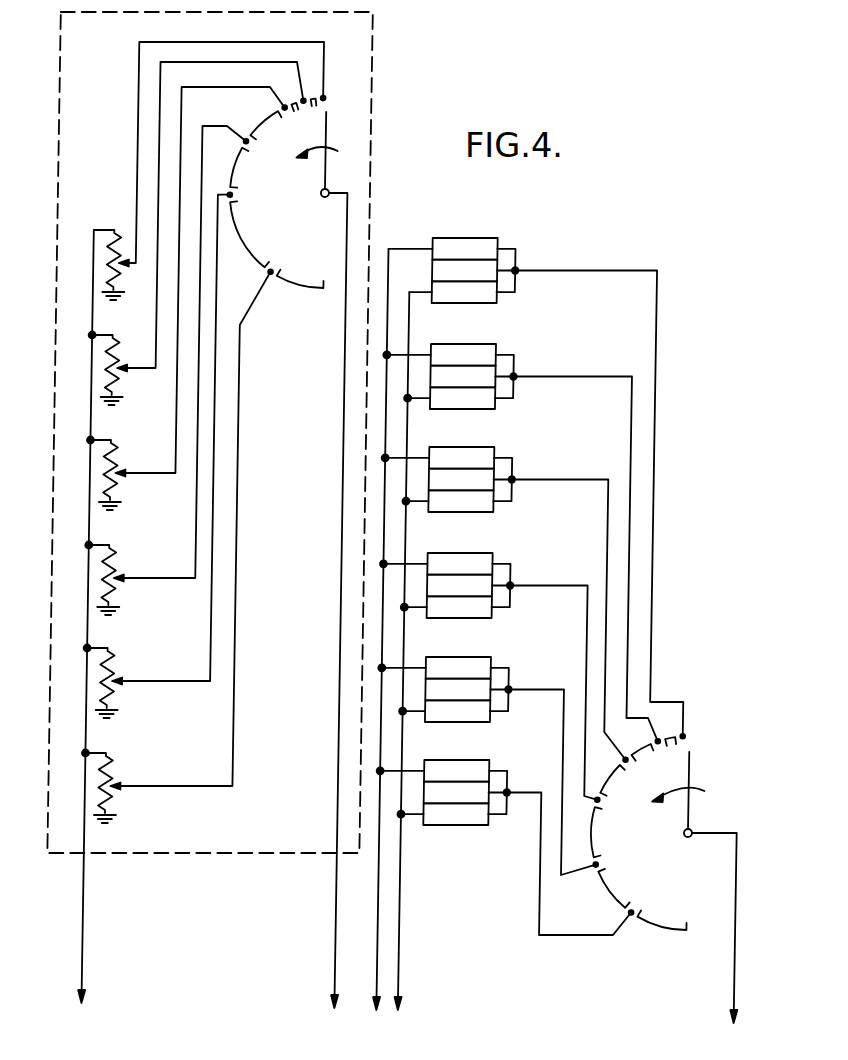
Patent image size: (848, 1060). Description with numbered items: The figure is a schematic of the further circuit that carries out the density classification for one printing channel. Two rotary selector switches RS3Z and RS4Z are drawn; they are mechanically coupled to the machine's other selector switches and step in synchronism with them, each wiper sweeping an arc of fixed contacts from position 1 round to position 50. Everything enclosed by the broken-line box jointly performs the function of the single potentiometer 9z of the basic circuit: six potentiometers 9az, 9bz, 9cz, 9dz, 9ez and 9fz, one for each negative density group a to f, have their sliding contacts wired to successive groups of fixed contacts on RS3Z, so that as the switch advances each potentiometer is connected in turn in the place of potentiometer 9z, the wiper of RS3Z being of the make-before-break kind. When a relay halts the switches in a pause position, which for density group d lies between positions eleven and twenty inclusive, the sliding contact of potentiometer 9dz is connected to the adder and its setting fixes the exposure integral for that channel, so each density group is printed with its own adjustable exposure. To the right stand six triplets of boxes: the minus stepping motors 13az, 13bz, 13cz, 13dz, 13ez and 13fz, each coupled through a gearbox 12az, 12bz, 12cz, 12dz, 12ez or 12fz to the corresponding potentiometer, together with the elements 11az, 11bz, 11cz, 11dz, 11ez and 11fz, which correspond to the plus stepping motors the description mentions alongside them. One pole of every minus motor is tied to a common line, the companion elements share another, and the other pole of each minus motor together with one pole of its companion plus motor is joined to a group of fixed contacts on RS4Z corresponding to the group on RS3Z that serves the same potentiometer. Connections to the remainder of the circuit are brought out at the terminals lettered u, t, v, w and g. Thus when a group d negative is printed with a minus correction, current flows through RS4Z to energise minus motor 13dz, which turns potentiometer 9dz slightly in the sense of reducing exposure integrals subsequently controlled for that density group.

The potentiometer 9z is at (374, 53).
The potentiometer 9az is at (208, 171).
The potentiometer 9bz is at (196, 233).
The potentiometer 9cz is at (185, 298).
The potentiometer 9dz is at (165, 370).
The potentiometer 9ez is at (156, 456).
The potentiometer 9fz is at (176, 547).
The resistor 11az is at (452, 254).
The gearbox 12az is at (558, 498).
The minus stepping motor 13az is at (462, 287).
The resistor 11bz is at (448, 360).
The gearbox 12bz is at (544, 554).
The minus stepping motor 13bz is at (459, 393).
The resistor 11cz is at (446, 463).
The gearbox 12cz is at (527, 614).
The minus stepping motor 13cz is at (457, 496).
The resistor 11dz is at (445, 569).
The gearbox 12dz is at (512, 687).
The minus stepping motor 13dz is at (456, 602).
The resistor 11ez is at (443, 673).
The gearbox 12ez is at (510, 777).
The minus stepping motor 13ez is at (454, 706).
The resistor 11fz is at (441, 776).
The gearbox 12fz is at (528, 858).
The minus stepping motor 13fz is at (452, 809).
The rotary selector switch RS3Z is at (281, 191).
The rotary selector switch RS4Z is at (647, 831).
The switch position 1 is at (527, 420).
The switch position 50 is at (515, 595).
The terminal u is at (86, 630).
The terminal t is at (334, 616).
The terminal v is at (382, 645).
The terminal w is at (405, 666).
The terminal g is at (715, 940).